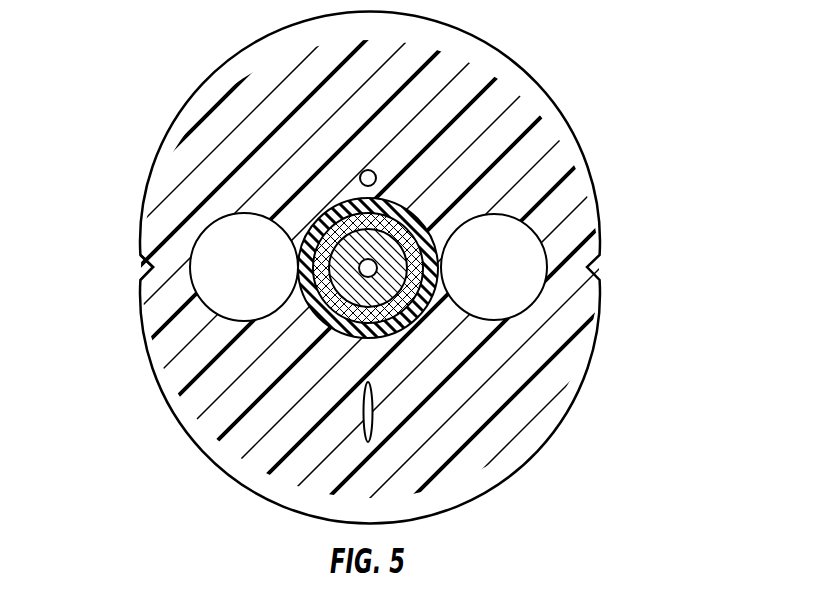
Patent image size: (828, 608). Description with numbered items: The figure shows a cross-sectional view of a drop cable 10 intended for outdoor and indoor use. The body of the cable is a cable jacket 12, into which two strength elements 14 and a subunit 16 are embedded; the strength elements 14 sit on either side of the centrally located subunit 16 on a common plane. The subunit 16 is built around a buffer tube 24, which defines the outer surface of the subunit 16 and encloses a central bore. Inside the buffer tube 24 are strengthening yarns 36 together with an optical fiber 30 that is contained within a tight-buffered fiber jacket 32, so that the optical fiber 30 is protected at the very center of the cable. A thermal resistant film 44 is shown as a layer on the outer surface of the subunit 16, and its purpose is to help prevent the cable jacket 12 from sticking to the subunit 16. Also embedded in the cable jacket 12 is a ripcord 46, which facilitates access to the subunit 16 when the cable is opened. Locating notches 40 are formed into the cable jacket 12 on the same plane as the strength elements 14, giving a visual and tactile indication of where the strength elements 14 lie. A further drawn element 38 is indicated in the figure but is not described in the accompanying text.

The drop cable 10 is at (200, 78).
The cable jacket 12 is at (562, 190).
The strength elements 14 is at (218, 254).
The subunit 16 is at (352, 267).
The buffer tube 24 is at (349, 308).
The optical fiber 30 is at (374, 266).
The tight-buffered fiber jacket 32 is at (410, 316).
The strengthening yarns 36 is at (345, 308).
The ripcord 38 is at (371, 424).
The locating notches 40 is at (121, 267).
The thermal resistant film 44 is at (399, 322).
The ripcord 46 is at (365, 170).